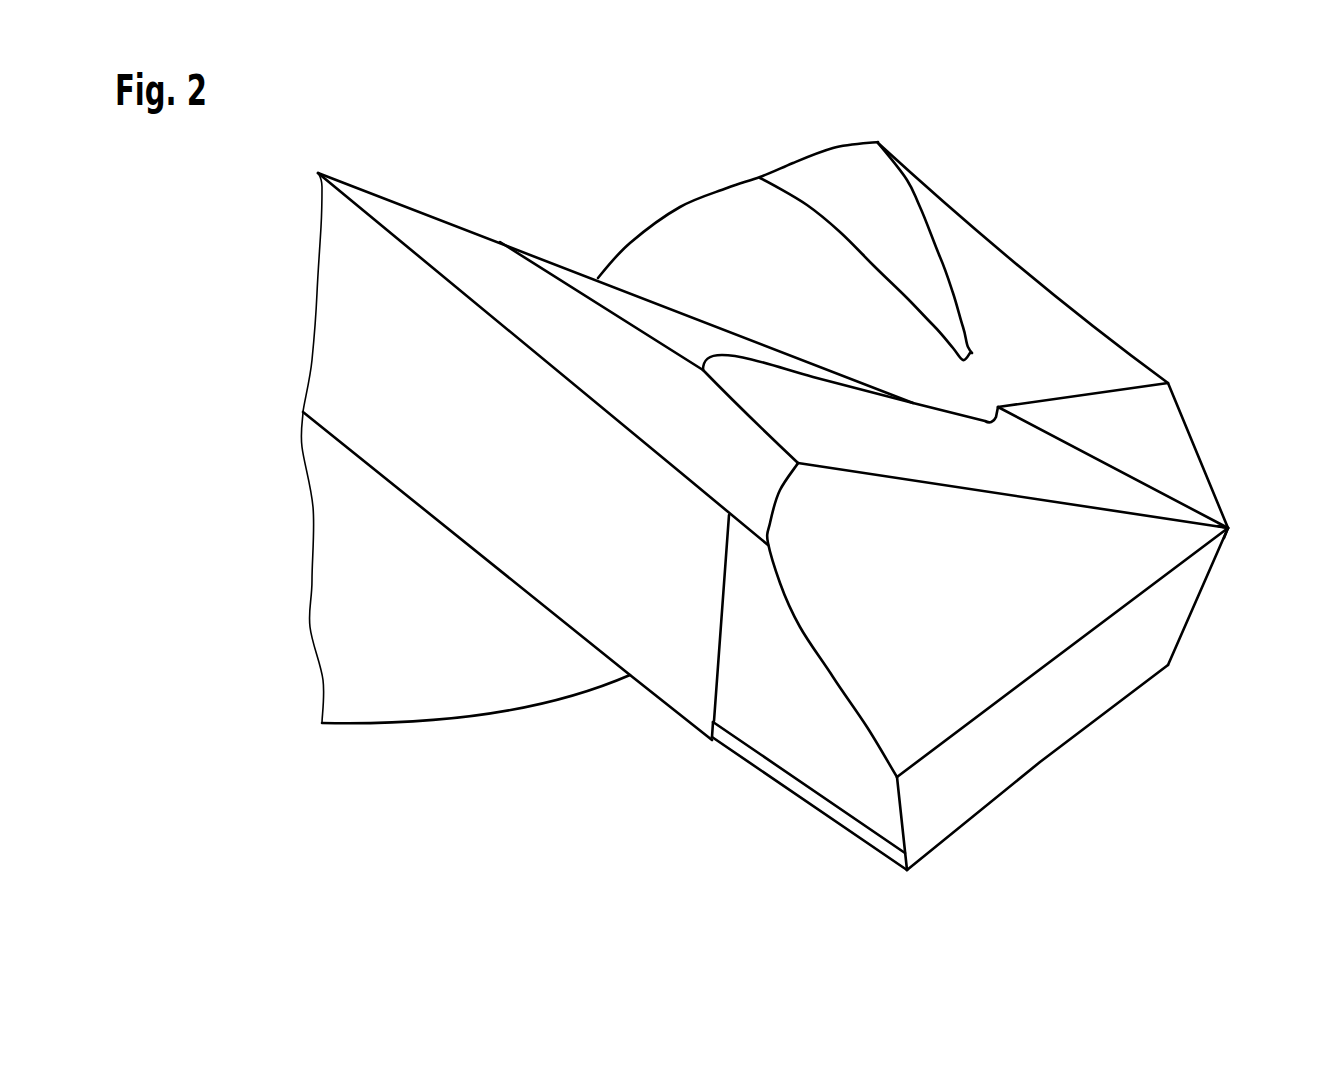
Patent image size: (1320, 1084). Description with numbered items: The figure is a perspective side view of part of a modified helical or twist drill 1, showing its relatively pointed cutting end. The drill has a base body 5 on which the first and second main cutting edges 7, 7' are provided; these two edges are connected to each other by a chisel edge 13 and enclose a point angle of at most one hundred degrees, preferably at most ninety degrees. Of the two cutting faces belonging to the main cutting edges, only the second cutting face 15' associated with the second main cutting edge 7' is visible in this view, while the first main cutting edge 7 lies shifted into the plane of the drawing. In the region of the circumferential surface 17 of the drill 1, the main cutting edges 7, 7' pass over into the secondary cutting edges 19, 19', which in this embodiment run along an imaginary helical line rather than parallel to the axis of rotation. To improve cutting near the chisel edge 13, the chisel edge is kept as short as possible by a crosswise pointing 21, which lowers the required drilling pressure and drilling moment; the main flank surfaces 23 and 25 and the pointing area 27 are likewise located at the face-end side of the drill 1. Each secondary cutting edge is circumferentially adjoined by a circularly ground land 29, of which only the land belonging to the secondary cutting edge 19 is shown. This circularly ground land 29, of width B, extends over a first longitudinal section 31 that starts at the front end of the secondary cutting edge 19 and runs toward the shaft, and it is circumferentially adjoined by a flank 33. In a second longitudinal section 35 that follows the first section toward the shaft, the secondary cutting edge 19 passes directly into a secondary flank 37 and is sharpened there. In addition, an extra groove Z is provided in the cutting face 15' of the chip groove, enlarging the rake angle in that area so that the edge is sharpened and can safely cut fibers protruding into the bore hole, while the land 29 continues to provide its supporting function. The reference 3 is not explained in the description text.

The drill 1 is at (1180, 180).
The cutting corner 3 is at (1228, 528).
The base body 5 is at (450, 355).
The first main cutting edge 7 is at (1037, 767).
The second main cutting edge 7' is at (1023, 263).
The chisel edge 13 is at (1193, 440).
The second cutting face 15' is at (866, 229).
The circumferential surface 17 is at (403, 222).
The secondary cutting edge 19 is at (791, 787).
The second secondary cutting edge 19' is at (738, 195).
The crosswise pointing 21 is at (1145, 423).
The main flank surface 23 is at (1148, 633).
The main flank surface 25 is at (1110, 580).
The pointing area 27 is at (1112, 495).
The circularly ground land 29 is at (820, 820).
The first longitudinal section 31 is at (787, 840).
The flank 33 is at (880, 790).
The second longitudinal section 35 is at (663, 733).
The secondary flank 37 is at (660, 643).
The width B is at (755, 828).
The extra groove Z is at (838, 190).